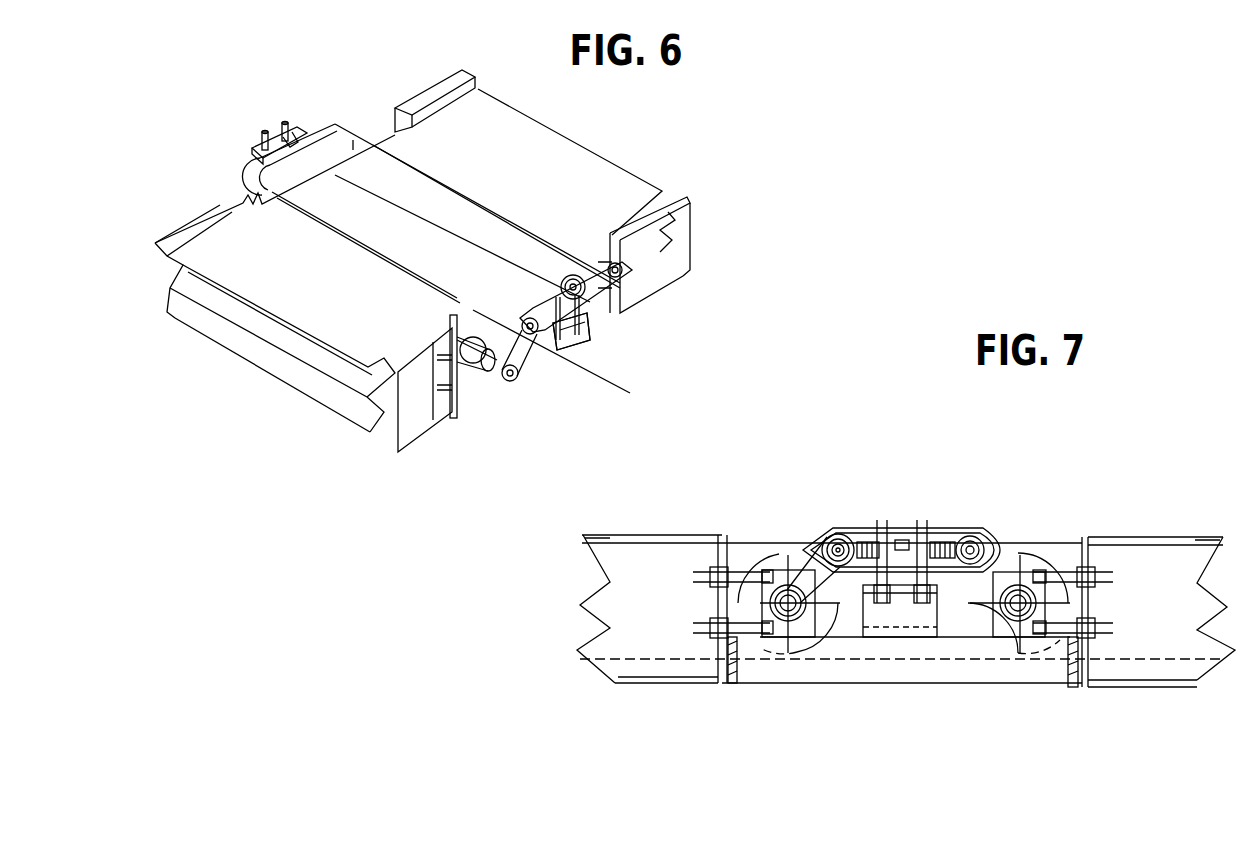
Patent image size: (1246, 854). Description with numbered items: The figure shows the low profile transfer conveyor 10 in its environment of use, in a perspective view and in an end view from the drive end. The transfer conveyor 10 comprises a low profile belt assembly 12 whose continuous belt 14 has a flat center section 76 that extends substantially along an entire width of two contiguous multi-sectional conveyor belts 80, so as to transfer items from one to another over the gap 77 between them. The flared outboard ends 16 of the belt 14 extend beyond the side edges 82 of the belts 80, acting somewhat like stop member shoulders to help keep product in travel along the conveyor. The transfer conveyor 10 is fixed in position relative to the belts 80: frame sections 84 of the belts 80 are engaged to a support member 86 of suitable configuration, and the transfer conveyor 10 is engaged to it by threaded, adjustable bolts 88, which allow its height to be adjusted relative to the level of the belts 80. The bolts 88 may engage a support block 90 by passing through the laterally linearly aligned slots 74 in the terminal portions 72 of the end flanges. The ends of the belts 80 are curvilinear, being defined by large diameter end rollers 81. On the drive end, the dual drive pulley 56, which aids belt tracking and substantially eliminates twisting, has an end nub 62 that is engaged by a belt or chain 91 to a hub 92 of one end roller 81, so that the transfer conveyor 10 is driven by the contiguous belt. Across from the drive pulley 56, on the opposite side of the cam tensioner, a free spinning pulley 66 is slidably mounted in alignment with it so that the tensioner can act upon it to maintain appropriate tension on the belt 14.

In FIG. 6, the transfer conveyor 10 is at (264, 122).
In FIG. 7, the transfer conveyor 10 is at (870, 545).
In FIG. 6, the belt assembly 12 is at (358, 128).
In FIG. 6, the belt 14 is at (317, 197).
In FIG. 6, the outboard ends 16 is at (337, 150).
In FIG. 6, the dual drive pulley 56 is at (560, 290).
In FIG. 7, the dual drive pulley 56 is at (838, 533).
In FIG. 6, the drive shaft nub 62 is at (525, 385).
In FIG. 7, the drive shaft nub 62 is at (820, 560).
In FIG. 7, the free spinning pulleys 66 is at (975, 538).
In FIG. 6, the terminal portion 72 is at (255, 150).
In FIG. 6, the slots 74 is at (292, 138).
In FIG. 6, the center section 76 is at (427, 222).
In FIG. 7, the gap 77 is at (910, 705).
In FIG. 6, the conveyor belts 80 is at (598, 185).
In FIG. 7, the conveyor belts 80 is at (740, 545).
In FIG. 6, the end rollers 81 is at (452, 420).
In FIG. 7, the end rollers 81 is at (780, 630).
In FIG. 6, the side edges 82 is at (435, 110).
In FIG. 6, the frame sections 84 is at (680, 245).
In FIG. 7, the frame sections 84 is at (610, 618).
In FIG. 6, the support member 86 is at (578, 366).
In FIG. 7, the support member 86 is at (975, 668).
In FIG. 6, the bolts 88 is at (262, 132).
In FIG. 7, the bolts 88 is at (928, 520).
In FIG. 6, the support block 90 is at (582, 348).
In FIG. 7, the support block 90 is at (880, 640).
In FIG. 6, the belt or chain 91 is at (440, 268).
In FIG. 7, the belt or chain 91 is at (790, 565).
In FIG. 6, the hub 92 is at (483, 364).
In FIG. 7, the hub 92 is at (723, 632).